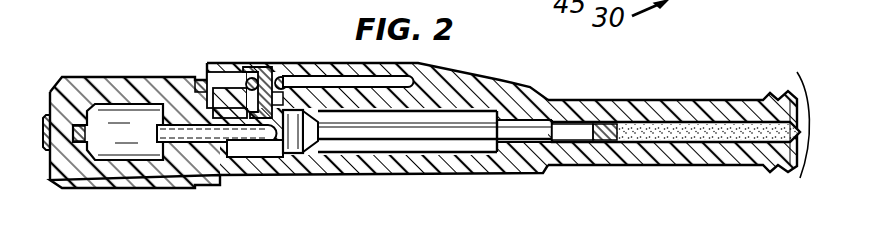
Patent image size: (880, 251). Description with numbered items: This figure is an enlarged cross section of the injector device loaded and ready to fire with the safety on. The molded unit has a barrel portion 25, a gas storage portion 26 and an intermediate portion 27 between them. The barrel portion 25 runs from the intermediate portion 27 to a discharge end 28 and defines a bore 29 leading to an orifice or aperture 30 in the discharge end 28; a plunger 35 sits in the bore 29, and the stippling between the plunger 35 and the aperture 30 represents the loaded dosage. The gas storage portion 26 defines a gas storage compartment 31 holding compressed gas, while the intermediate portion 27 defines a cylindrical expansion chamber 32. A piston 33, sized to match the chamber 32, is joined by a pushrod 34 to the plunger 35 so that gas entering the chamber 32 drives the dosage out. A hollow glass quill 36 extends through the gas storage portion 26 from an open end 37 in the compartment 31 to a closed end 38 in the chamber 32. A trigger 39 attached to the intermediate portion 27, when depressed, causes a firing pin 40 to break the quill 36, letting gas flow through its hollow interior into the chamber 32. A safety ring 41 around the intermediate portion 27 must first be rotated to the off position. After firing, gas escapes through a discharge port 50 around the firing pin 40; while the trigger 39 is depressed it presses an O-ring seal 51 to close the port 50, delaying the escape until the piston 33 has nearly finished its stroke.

The barrel portion 25 is at (697, 170).
The gas storage portion 26 is at (82, 193).
The intermediate portion 27 is at (373, 177).
The discharge end 28 is at (797, 73).
The bore 29 is at (578, 126).
The orifice or aperture 30 is at (800, 178).
The gas storage compartment 31 is at (108, 110).
The expansion chamber 32 is at (284, 165).
The piston 33 is at (305, 152).
The pushrod 34 is at (460, 135).
The plunger 35 is at (608, 143).
The hollow glass quill 36 is at (198, 167).
The open end 37 is at (157, 128).
The closed end 38 is at (257, 174).
The trigger 39 is at (258, 67).
The firing pin 40 is at (213, 112).
The safety ring 41 is at (203, 64).
The discharge port 50 is at (297, 97).
The O-ring seal 51 is at (287, 72).